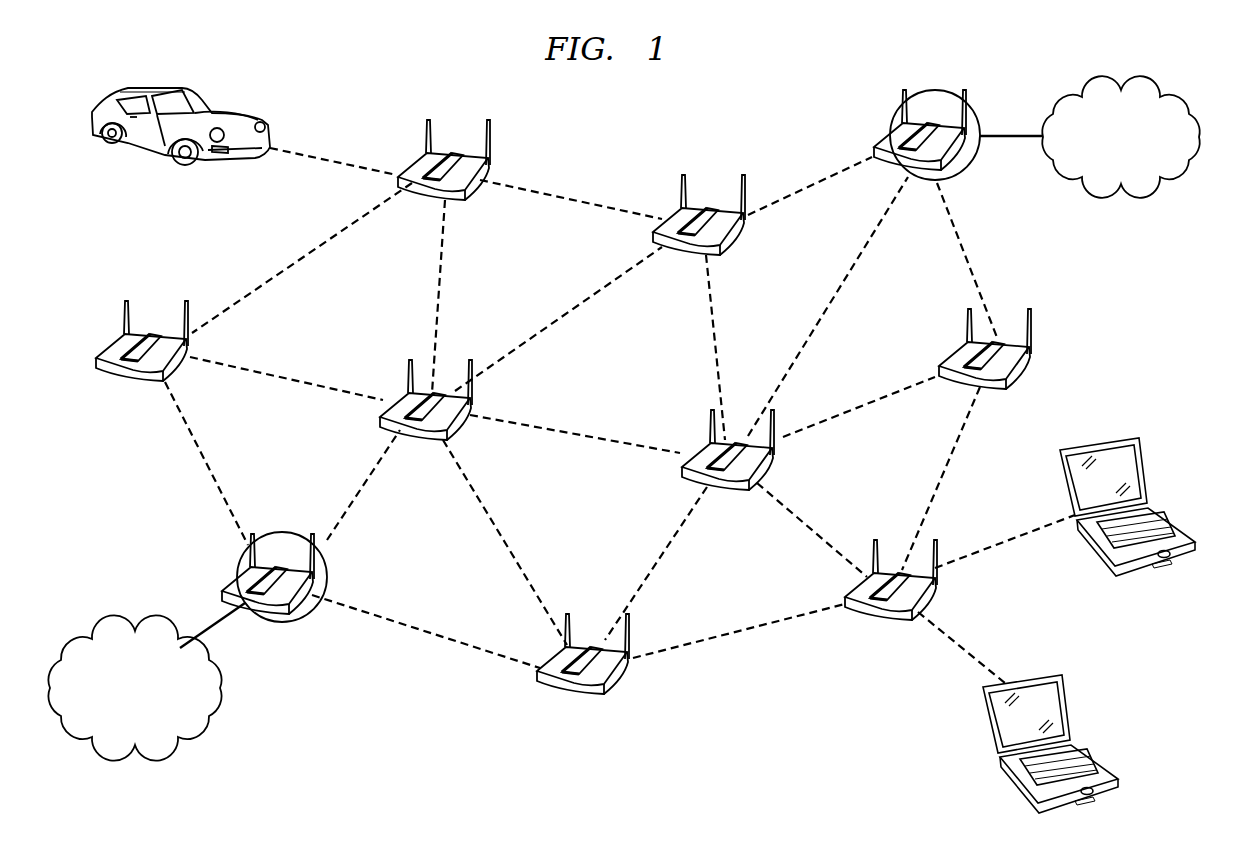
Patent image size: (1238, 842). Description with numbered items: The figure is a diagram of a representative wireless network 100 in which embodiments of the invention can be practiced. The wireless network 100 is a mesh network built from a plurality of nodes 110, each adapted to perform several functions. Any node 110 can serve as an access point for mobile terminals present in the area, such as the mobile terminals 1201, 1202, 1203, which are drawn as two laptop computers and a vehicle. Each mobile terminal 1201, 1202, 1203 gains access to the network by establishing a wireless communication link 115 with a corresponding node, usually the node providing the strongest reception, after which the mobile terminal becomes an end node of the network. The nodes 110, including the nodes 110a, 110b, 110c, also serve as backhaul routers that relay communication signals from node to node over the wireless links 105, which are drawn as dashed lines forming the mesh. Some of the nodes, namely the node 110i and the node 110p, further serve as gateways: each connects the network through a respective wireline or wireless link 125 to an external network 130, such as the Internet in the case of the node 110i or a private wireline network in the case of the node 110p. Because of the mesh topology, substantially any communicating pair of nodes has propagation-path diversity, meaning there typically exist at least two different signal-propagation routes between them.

The wireless network 100 is at (583, 95).
The wireless link 105 is at (288, 270).
The node 110 is at (110, 375).
The node 110i is at (876, 142).
The node 110b is at (1028, 362).
The node 110c is at (777, 458).
The node 110p is at (220, 587).
The node 110a is at (882, 622).
The wireless communication link 115 is at (326, 152).
The mobile terminal 1201 is at (1150, 481).
The mobile terminal 1202 is at (1072, 721).
The mobile terminal 1203 is at (137, 150).
The wireline or wireless link 125 is at (1014, 134).
The external network 130 is at (1165, 116).